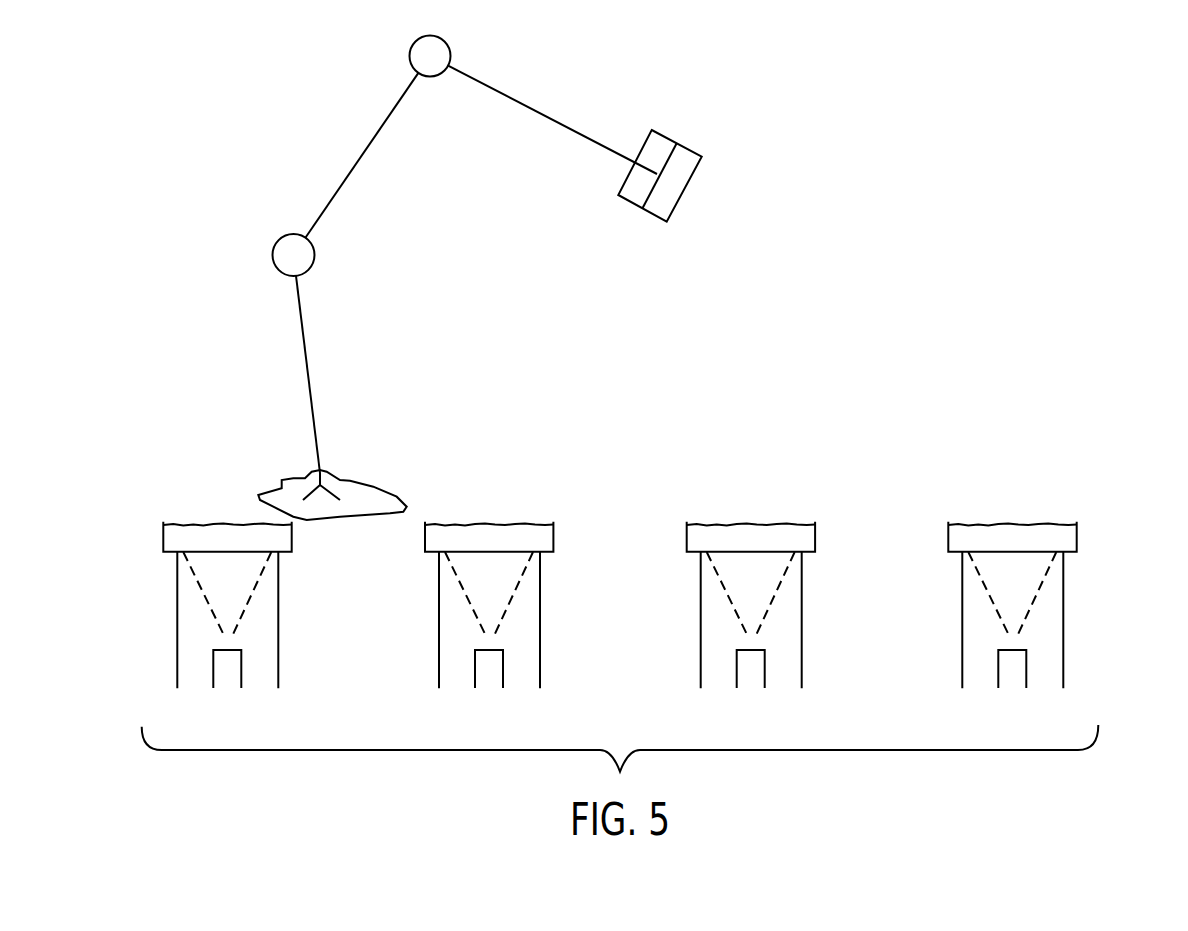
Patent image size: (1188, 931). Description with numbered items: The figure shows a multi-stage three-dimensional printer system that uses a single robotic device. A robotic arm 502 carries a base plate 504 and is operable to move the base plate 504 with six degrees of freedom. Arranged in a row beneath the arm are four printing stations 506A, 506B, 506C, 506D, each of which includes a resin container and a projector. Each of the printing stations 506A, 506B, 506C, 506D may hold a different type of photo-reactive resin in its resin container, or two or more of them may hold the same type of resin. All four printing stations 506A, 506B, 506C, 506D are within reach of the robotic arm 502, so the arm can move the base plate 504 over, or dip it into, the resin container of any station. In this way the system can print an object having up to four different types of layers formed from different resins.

The robotic arm 502 is at (537, 108).
The base plate 504 is at (680, 202).
The printing station 506A is at (266, 618).
The printing station 506B is at (528, 618).
The printing station 506C is at (790, 618).
The printing station 506D is at (1051, 618).